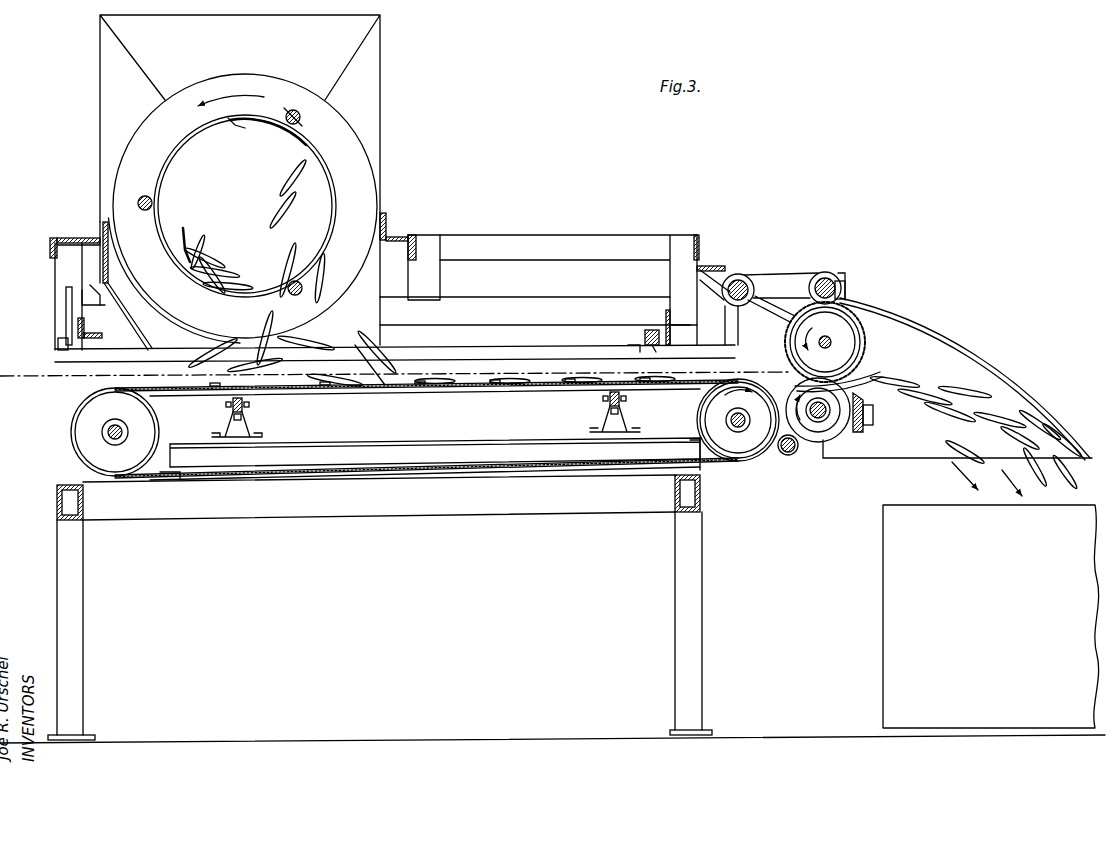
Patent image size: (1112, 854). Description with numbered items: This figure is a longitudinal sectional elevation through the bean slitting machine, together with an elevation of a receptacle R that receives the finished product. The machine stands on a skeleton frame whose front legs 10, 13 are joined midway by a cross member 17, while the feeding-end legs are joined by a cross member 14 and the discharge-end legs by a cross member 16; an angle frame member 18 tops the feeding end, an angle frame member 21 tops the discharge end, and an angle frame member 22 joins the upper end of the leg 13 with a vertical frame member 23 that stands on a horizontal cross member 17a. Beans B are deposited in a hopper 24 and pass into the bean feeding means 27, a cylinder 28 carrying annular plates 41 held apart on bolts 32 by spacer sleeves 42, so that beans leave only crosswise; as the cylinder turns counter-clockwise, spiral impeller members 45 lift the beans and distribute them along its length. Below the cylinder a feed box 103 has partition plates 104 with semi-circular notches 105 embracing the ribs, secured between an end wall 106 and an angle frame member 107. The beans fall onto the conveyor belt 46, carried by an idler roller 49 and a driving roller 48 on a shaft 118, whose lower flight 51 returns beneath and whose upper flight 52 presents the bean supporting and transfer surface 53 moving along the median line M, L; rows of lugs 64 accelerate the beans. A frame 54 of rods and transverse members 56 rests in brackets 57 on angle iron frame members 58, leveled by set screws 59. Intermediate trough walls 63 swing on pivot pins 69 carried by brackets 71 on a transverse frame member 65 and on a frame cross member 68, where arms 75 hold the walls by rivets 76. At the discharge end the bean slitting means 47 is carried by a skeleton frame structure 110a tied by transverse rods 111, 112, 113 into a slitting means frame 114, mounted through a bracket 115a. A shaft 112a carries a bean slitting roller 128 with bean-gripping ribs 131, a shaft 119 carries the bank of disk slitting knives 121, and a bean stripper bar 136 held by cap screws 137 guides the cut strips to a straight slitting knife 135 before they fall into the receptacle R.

The hopper 24 is at (100, 42).
The annular plates 41 is at (125, 160).
The bean feeding means 27 is at (368, 143).
The cylinder 28 is at (362, 185).
The spacer sleeves 42 is at (300, 118).
The bolts 32 is at (293, 110).
The spiral impeller members 45 is at (272, 135).
The beans B is at (282, 207).
The angle frame member 18 is at (50, 238).
The feed box 103 is at (100, 258).
The end wall 106 is at (112, 288).
The feed passage partition plates 104 is at (125, 283).
The semi-circular notches 105 is at (168, 300).
The horizontal cross member 17a is at (90, 285).
The brackets 71 is at (68, 325).
The transverse frame member 65 is at (86, 334).
The pivot pins 69 is at (58, 345).
The intermediate trough walls 63 is at (488, 348).
The median line M is at (395, 376).
The median line L is at (748, 370).
The angle frame member 107 is at (388, 224).
The vertical frame member 23 is at (442, 245).
The angle frame member 22 is at (588, 235).
The angle frame member 21 is at (700, 240).
The frame cross member 68 is at (668, 325).
The arms 75 is at (634, 350).
The rivets 76 is at (654, 348).
The bracket 115a is at (722, 268).
The transverse rod 112 is at (745, 282).
The skeleton frame structure 110a is at (778, 280).
The transverse rod 111 is at (838, 286).
The slitting means frame 114 is at (812, 284).
The shaft 112a is at (832, 338).
The bean slitting roller 128 is at (872, 332).
The bean slitting means 47 is at (868, 323).
The bean-gripping ribs 131 is at (935, 327).
The bean stripper bar 136 is at (865, 435).
The straight slitting knife 135 is at (856, 382).
The slitting knives 121 is at (849, 422).
The cap screws 137 is at (875, 415).
The shaft 119 is at (820, 424).
The transverse rod 113 is at (790, 455).
The driving roller 48 is at (724, 413).
The shaft 118 is at (745, 426).
The idler roller 49 is at (85, 432).
The lugs 64 is at (114, 387).
The upper flight 52 is at (392, 392).
The frame 54 is at (532, 391).
The angle iron frame members 58 is at (434, 444).
The transverse members 56 is at (232, 405).
The brackets 57 is at (250, 418).
The set screws 59 is at (237, 445).
The bean supporting and transfer surface 53 is at (355, 345).
The conveyor belt 46 is at (180, 477).
The lower flight 51 is at (276, 481).
The cross member 17 is at (288, 520).
The cross member 14 is at (57, 493).
The cross member 16 is at (702, 494).
The leg 10 is at (83, 653).
The leg 13 is at (702, 658).
The receptacle R is at (991, 616).